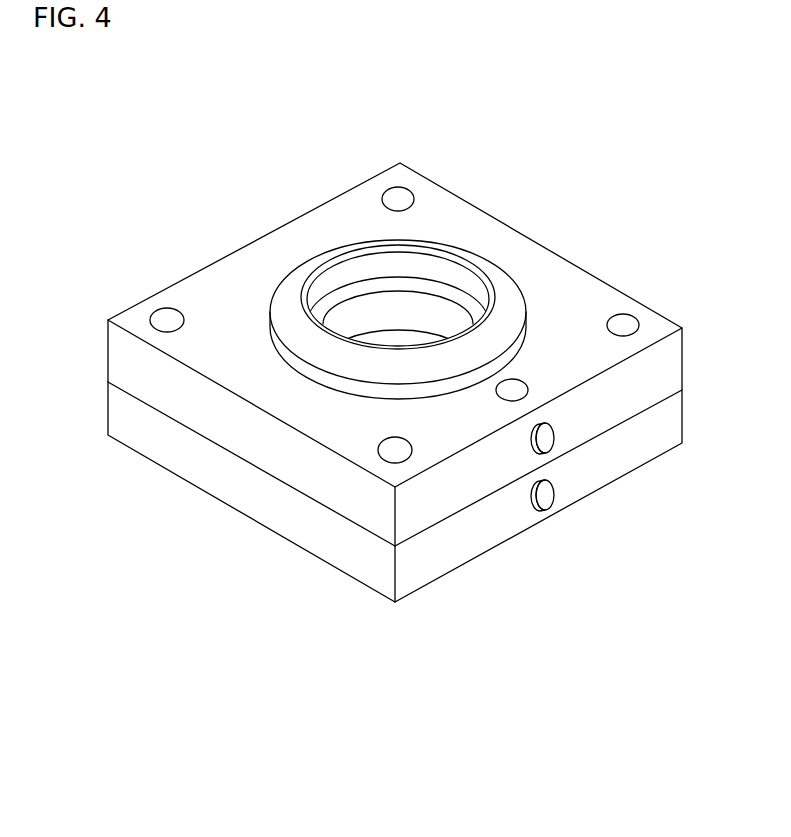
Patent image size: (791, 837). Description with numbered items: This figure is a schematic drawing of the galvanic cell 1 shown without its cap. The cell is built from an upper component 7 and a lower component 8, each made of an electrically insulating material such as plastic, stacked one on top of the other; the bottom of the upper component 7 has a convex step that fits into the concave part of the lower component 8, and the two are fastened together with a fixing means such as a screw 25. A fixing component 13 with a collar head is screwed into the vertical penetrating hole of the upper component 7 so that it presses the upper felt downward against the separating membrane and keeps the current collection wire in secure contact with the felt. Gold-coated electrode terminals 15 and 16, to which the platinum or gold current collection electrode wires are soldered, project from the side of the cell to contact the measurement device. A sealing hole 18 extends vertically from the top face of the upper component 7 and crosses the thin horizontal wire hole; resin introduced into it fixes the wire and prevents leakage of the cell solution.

The galvanic cell 1 is at (327, 187).
The upper component 7 is at (115, 355).
The lower component 8 is at (118, 417).
The fixing component 13 is at (508, 292).
The electrode terminal 15 is at (547, 438).
The electrode terminal 16 is at (550, 497).
The sealing hole 18 is at (520, 390).
The screw 25 is at (160, 306).